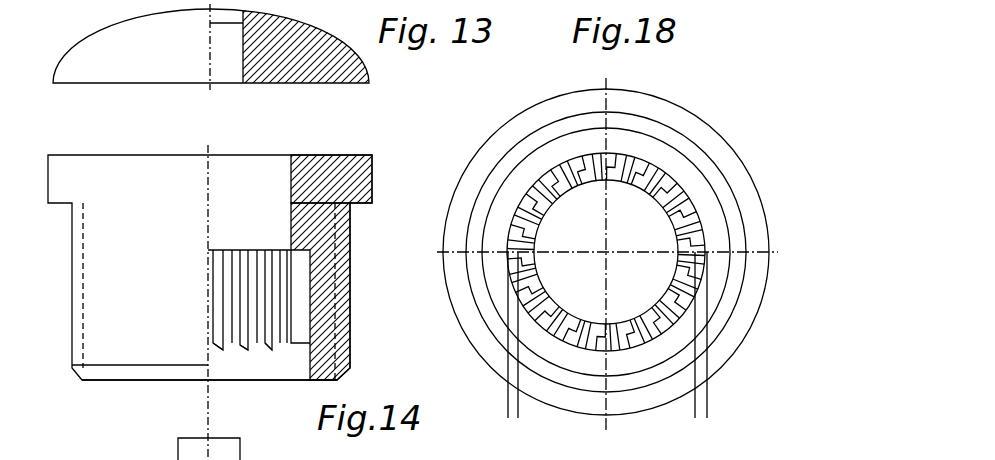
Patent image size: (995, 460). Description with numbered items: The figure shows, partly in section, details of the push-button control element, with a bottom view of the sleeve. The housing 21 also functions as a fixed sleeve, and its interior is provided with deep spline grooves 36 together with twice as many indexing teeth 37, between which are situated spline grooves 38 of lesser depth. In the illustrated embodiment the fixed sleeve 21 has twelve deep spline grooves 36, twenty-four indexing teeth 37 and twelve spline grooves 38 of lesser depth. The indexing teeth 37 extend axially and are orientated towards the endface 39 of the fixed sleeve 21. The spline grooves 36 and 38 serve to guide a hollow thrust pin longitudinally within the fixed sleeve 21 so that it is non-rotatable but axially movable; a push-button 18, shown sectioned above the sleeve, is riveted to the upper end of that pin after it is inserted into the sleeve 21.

In FIG. 13, the push-button 18 is at (288, 67).
In FIG. 14, the housing 21 is at (328, 236).
In FIG. 18, the housing 21 is at (667, 153).
In FIG. 14, the deep spline grooves 36 is at (278, 325).
In FIG. 18, the deep spline grooves 36 is at (676, 262).
In FIG. 14, the indexing teeth 37 is at (270, 350).
In FIG. 18, the indexing teeth 37 is at (660, 318).
In FIG. 14, the spline grooves of lesser depth 38 is at (267, 290).
In FIG. 18, the spline grooves of lesser depth 38 is at (620, 340).
In FIG. 14, the endface 39 is at (122, 380).